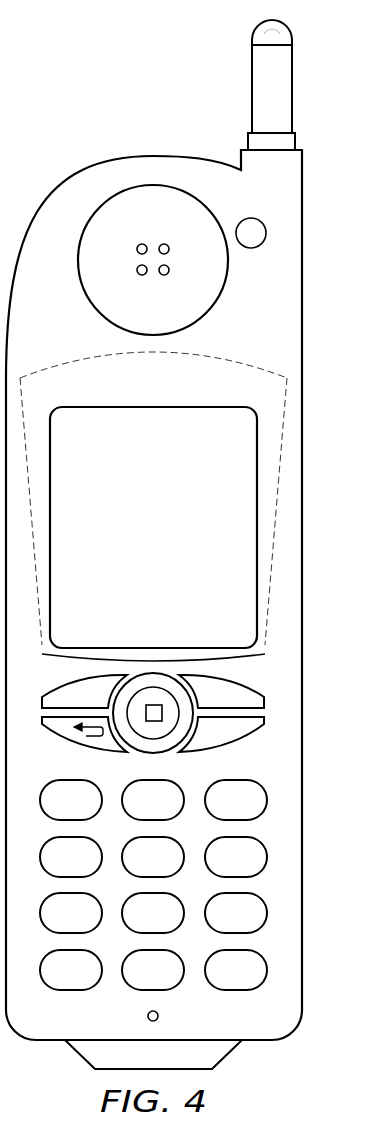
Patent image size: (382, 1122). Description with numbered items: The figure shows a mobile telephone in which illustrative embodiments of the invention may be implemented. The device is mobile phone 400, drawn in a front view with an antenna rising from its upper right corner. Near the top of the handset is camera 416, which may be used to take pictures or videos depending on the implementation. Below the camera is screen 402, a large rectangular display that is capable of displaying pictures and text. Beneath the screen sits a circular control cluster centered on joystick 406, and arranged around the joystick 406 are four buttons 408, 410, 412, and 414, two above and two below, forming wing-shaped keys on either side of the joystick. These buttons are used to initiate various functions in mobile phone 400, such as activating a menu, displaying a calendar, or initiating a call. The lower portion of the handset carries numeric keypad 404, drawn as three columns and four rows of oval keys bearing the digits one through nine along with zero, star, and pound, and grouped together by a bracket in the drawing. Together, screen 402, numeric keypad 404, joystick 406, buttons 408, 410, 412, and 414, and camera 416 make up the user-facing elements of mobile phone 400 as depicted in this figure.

The mobile phone 400 is at (118, 98).
The screen 402 is at (171, 542).
The numeric keypad 404 is at (312, 762).
The joystick 406 is at (152, 704).
The button 408 is at (78, 690).
The button 410 is at (228, 690).
The button 412 is at (77, 736).
The button 414 is at (230, 736).
The camera 416 is at (103, 293).